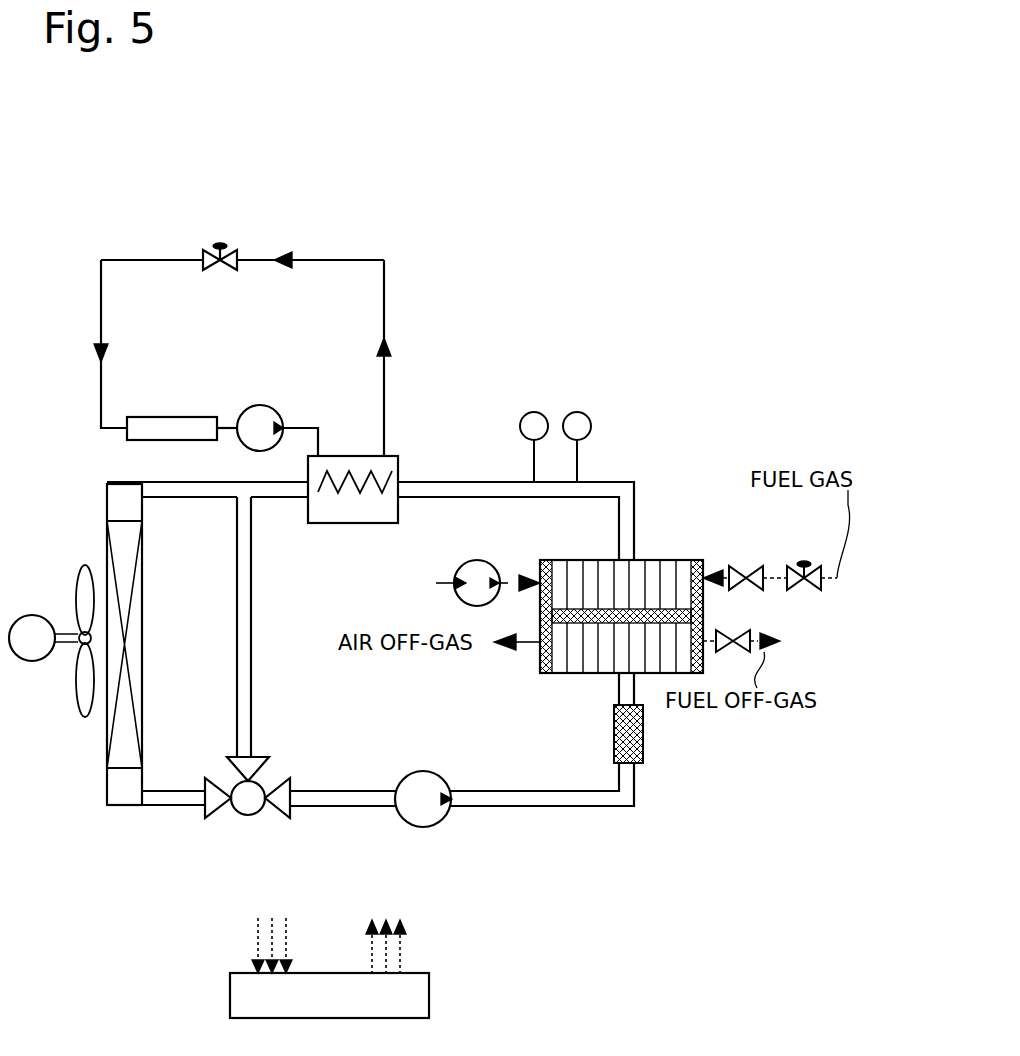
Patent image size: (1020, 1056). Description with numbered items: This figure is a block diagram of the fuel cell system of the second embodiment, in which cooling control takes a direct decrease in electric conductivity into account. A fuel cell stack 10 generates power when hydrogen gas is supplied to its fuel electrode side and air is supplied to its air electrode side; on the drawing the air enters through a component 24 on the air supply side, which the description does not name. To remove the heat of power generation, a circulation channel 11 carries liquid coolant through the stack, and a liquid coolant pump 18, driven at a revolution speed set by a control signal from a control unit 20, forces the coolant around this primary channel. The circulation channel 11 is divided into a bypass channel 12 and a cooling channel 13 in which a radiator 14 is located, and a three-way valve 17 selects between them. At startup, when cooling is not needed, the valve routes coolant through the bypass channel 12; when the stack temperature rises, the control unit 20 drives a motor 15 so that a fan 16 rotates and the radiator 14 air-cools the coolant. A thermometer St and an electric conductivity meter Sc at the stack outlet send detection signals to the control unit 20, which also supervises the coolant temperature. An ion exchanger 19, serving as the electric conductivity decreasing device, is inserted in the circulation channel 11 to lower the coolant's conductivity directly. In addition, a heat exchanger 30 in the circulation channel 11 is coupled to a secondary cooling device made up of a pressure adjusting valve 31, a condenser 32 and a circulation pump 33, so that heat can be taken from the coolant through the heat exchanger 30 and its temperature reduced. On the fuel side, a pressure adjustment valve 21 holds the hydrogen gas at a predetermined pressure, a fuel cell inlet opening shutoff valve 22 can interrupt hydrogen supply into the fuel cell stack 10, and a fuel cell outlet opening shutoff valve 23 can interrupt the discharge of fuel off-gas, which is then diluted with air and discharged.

The fuel cell stack 10 is at (668, 560).
The circulation channel 11 is at (343, 791).
The bypass channel 12 is at (251, 697).
The cooling channel 13 is at (168, 791).
The radiator 14 is at (142, 560).
The motor 15 is at (33, 614).
The fan 16 is at (80, 565).
The three-way valve 17 is at (250, 816).
The liquid coolant pump 18 is at (424, 827).
The ion exchanger 19 is at (643, 757).
The control unit 20 is at (430, 973).
The pressure adjustment valve 21 is at (805, 561).
The fuel cell inlet opening shutoff valve 22 is at (748, 567).
The fuel cell outlet opening shutoff valve 23 is at (740, 631).
The air blower 24 is at (490, 560).
The heat exchanger 30 is at (347, 456).
The pressure adjusting valve 31 is at (225, 243).
The condenser 32 is at (160, 417).
The circulation pump 33 is at (270, 404).
The electric conductivity meter Sc is at (536, 412).
The thermometer St is at (580, 412).